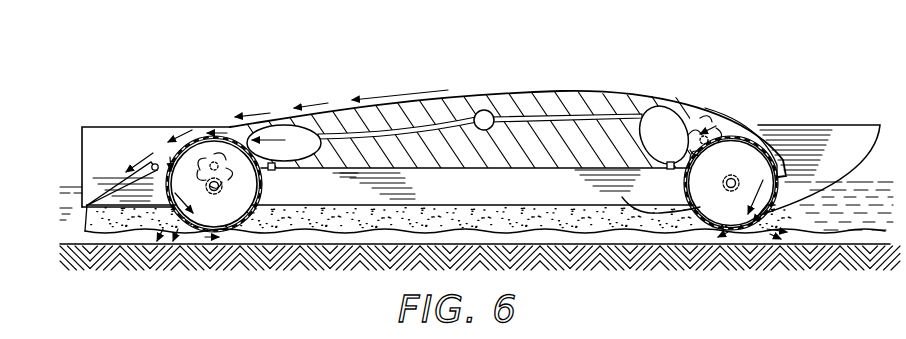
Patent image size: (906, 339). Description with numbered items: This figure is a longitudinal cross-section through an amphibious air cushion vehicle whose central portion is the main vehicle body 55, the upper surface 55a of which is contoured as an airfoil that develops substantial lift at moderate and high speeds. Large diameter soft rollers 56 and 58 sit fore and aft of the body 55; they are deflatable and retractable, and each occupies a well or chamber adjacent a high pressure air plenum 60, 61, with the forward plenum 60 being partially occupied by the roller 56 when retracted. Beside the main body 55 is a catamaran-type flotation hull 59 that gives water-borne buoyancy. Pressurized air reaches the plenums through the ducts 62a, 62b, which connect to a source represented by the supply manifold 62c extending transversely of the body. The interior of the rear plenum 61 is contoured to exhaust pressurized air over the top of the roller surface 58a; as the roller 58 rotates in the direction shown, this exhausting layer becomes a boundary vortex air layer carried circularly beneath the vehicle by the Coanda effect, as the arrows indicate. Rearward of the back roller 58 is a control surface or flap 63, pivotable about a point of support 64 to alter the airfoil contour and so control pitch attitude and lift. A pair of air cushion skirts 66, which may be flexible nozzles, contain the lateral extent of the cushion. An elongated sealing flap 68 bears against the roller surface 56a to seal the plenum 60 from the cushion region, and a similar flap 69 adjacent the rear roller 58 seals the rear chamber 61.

The main vehicle body 55 is at (594, 108).
The upper surface 55a is at (491, 93).
The roller 56 is at (708, 213).
The roller surface 56a is at (677, 183).
The roller 58 is at (238, 210).
The roller surface 58a is at (198, 142).
The catamaran-type flotation hull 59 is at (835, 138).
The high pressure air plenum 60 is at (675, 115).
The high pressure air plenum 61 is at (302, 138).
The duct 62a is at (569, 122).
The duct 62b is at (388, 130).
The supply manifold 62c is at (480, 112).
The control surface or flap 63 is at (122, 186).
The point of support 64 is at (160, 168).
The air cushion skirt 66 is at (528, 220).
The sealing flap 68 is at (675, 169).
The flap 69 is at (267, 170).